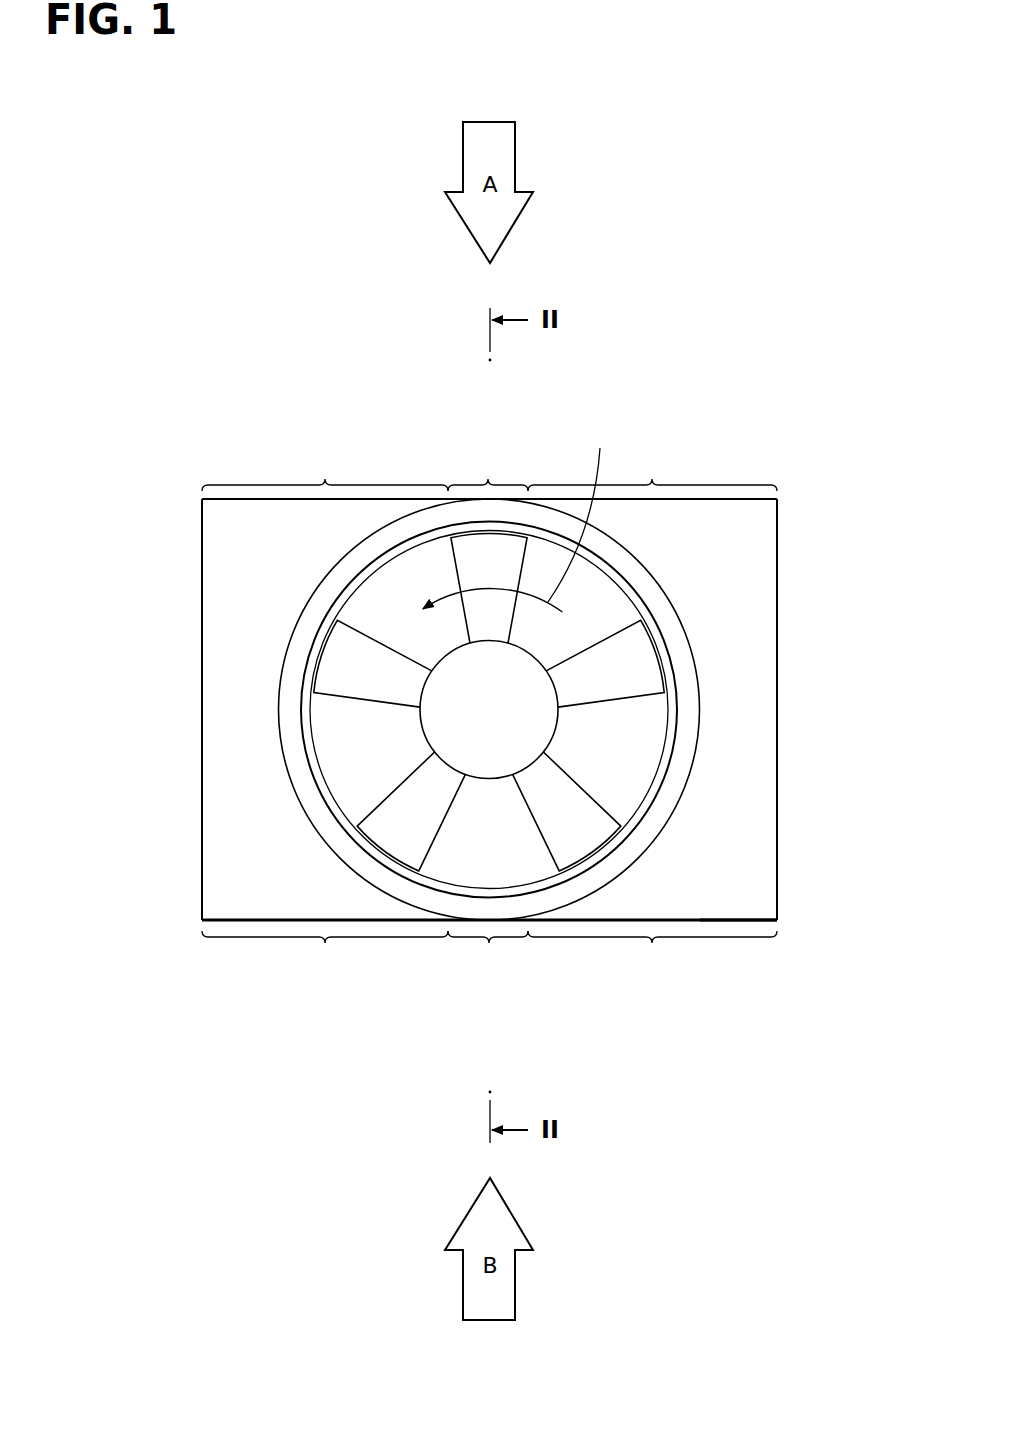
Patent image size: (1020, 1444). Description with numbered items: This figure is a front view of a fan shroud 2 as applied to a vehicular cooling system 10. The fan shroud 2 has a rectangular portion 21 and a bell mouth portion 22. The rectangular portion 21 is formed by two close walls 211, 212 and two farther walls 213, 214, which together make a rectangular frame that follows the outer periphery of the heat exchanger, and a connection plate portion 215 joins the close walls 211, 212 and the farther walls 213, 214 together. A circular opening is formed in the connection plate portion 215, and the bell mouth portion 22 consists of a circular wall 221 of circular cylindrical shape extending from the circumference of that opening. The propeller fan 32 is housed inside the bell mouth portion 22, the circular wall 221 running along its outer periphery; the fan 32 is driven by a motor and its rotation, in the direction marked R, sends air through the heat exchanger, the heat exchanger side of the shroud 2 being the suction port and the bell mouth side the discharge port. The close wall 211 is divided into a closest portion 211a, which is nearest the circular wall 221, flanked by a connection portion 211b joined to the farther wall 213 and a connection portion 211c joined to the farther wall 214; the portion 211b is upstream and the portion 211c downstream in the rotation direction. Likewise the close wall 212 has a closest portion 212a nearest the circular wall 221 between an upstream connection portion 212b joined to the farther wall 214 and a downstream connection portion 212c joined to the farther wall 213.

The vehicular cooling system 10 is at (832, 421).
The fan shroud 2 is at (810, 556).
The rectangular portion 21 is at (782, 647).
The close wall 211 is at (703, 495).
The closest portion 211a is at (488, 469).
The connection portion 211b is at (652, 469).
The connection portion 211c is at (325, 469).
The close wall 212 is at (703, 930).
The closest portion 212a is at (488, 955).
The connection portion 212b is at (325, 955).
The connection portion 212c is at (652, 955).
The farther wall 213 is at (778, 733).
The farther wall 214 is at (200, 730).
The connection plate portion 215 is at (755, 875).
The bell mouth portion 22 is at (597, 894).
The circular wall 221 is at (373, 887).
The propeller fan 32 is at (355, 663).